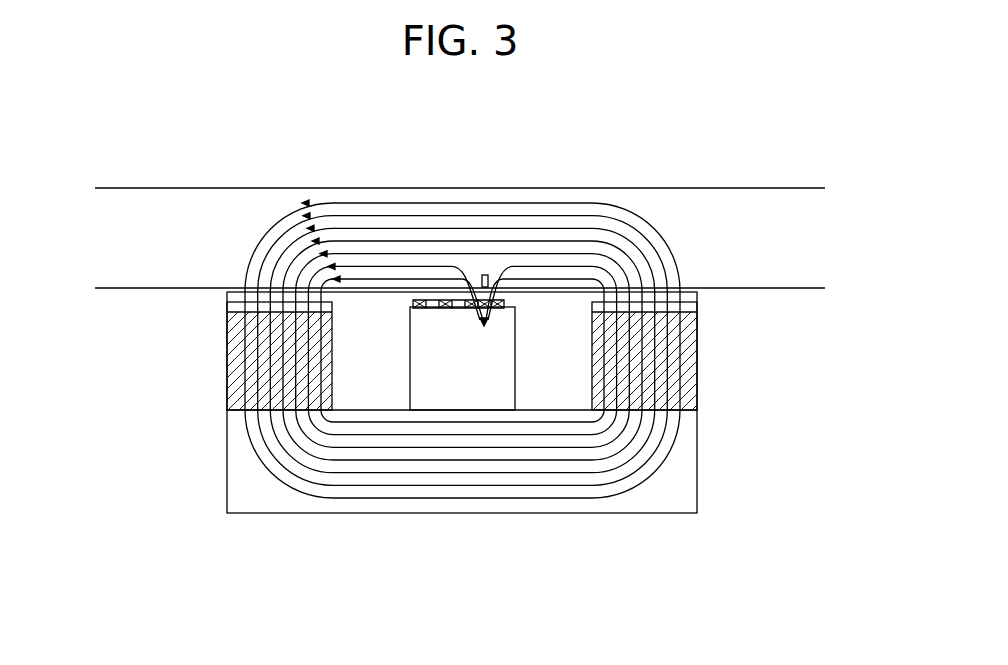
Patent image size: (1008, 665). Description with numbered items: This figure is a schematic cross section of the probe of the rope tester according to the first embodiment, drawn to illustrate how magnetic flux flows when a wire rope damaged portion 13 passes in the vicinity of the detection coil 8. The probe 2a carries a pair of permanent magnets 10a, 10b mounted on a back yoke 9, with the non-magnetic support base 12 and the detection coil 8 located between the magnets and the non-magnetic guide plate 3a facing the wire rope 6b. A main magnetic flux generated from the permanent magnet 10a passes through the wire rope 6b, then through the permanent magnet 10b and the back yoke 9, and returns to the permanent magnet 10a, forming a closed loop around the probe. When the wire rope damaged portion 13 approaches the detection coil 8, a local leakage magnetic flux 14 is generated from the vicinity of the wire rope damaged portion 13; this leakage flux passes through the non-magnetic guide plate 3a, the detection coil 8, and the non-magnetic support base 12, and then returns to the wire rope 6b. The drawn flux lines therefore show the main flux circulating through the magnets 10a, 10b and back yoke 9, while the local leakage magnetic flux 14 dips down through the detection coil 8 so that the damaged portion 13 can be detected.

The wire rope 6b is at (170, 230).
The non-magnetic guide plate 3a is at (688, 291).
The magnetic head 2a is at (230, 532).
The back yoke 9 is at (468, 500).
The permanent magnet 10a is at (680, 370).
The permanent magnet 10b is at (228, 380).
The non-magnetic support base 12 is at (442, 347).
The detection coil 8 is at (447, 303).
The wire rope damaged portion 13 is at (490, 280).
The local leakage magnetic flux 14 is at (497, 317).